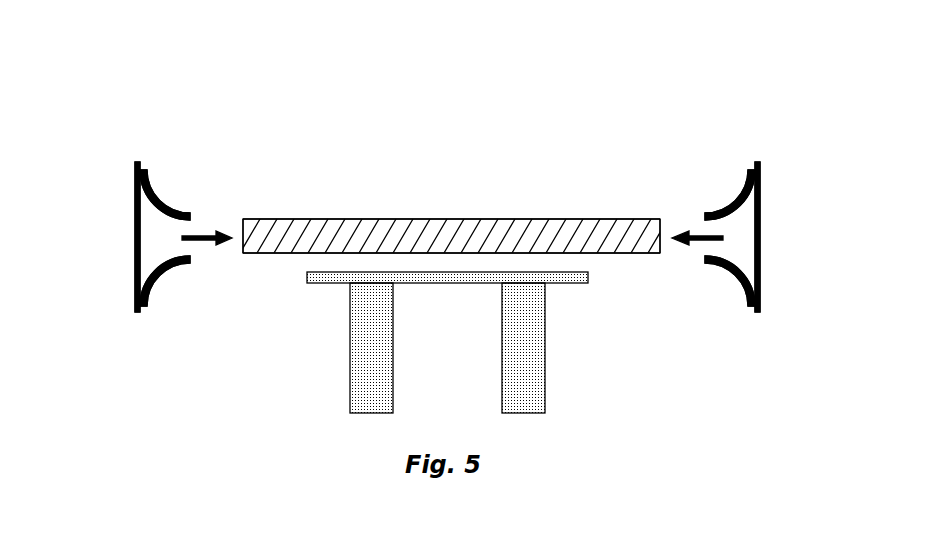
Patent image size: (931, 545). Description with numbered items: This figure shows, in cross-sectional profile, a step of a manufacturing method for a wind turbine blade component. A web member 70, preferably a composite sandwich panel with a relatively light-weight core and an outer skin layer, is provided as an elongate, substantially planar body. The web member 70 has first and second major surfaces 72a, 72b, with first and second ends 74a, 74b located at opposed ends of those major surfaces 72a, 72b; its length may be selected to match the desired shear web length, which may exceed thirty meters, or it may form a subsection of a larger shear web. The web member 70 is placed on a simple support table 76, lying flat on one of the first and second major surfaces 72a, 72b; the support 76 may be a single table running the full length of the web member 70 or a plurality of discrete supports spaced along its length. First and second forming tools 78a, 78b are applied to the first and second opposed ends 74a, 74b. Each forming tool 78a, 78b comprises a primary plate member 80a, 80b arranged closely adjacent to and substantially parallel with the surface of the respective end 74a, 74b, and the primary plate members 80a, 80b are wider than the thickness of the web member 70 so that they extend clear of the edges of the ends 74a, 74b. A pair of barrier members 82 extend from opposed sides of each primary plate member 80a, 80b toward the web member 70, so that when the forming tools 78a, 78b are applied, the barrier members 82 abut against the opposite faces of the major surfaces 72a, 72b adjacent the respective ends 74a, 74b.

The web member 70 is at (397, 219).
The first major surface 72a is at (557, 219).
The second major surface 72b is at (290, 253).
The first end 74a is at (235, 274).
The second end 74b is at (651, 275).
The support table 76 is at (556, 284).
The first forming tool 78a is at (131, 330).
The second forming tool 78b is at (763, 332).
The first primary plate member 80a is at (135, 235).
The second primary plate member 80b is at (760, 228).
The barrier members 82 is at (173, 259).